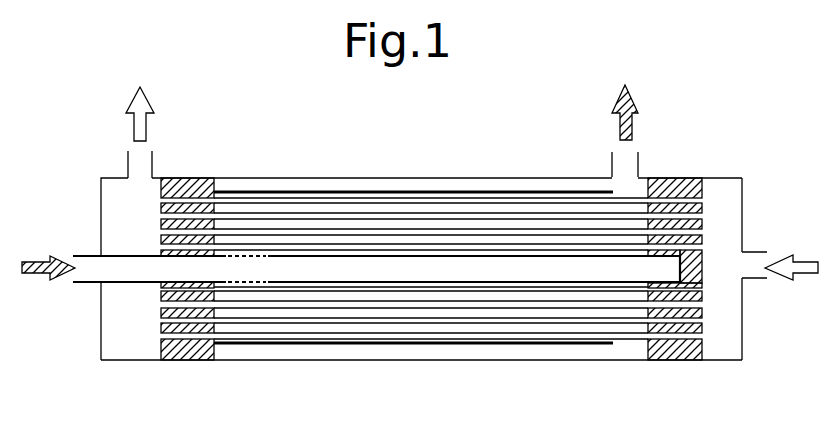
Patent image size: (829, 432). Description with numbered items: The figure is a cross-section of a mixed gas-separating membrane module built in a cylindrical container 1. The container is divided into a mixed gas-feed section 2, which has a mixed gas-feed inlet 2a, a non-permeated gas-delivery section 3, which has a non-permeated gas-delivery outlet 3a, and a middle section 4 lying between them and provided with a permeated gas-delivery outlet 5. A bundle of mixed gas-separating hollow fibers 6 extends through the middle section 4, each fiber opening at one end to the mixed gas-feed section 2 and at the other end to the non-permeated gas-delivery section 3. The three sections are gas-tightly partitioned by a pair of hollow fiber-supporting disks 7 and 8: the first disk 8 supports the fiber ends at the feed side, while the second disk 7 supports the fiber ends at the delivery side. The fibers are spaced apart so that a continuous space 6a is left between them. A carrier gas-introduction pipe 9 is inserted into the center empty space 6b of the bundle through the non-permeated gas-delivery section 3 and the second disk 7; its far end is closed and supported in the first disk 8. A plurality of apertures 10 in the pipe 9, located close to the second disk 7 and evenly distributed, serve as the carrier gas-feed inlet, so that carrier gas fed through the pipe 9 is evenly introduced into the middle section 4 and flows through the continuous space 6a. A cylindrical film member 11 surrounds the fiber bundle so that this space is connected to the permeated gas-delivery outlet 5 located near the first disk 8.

The cylindrical container 1 is at (352, 177).
The mixed gas-feed section 2 is at (735, 222).
The mixed gas-feed inlet 2a is at (757, 281).
The non-permeated gas-delivery section 3 is at (114, 219).
The non-permeated gas-delivery outlet 3a is at (128, 168).
The middle section 4 is at (503, 186).
The permeated gas-delivery outlet 5 is at (612, 168).
The mixed gas-separating hollow fibers 6 is at (626, 308).
The continuous space 6a is at (438, 213).
The center empty space 6b is at (565, 275).
The second hollow fiber-supporting disk 7 is at (181, 352).
The first hollow fiber-supporting disk 8 is at (657, 190).
The carrier gas-introduction pipe 9 is at (87, 283).
The apertures 10 is at (239, 280).
The cylindrical film member 11 is at (413, 346).